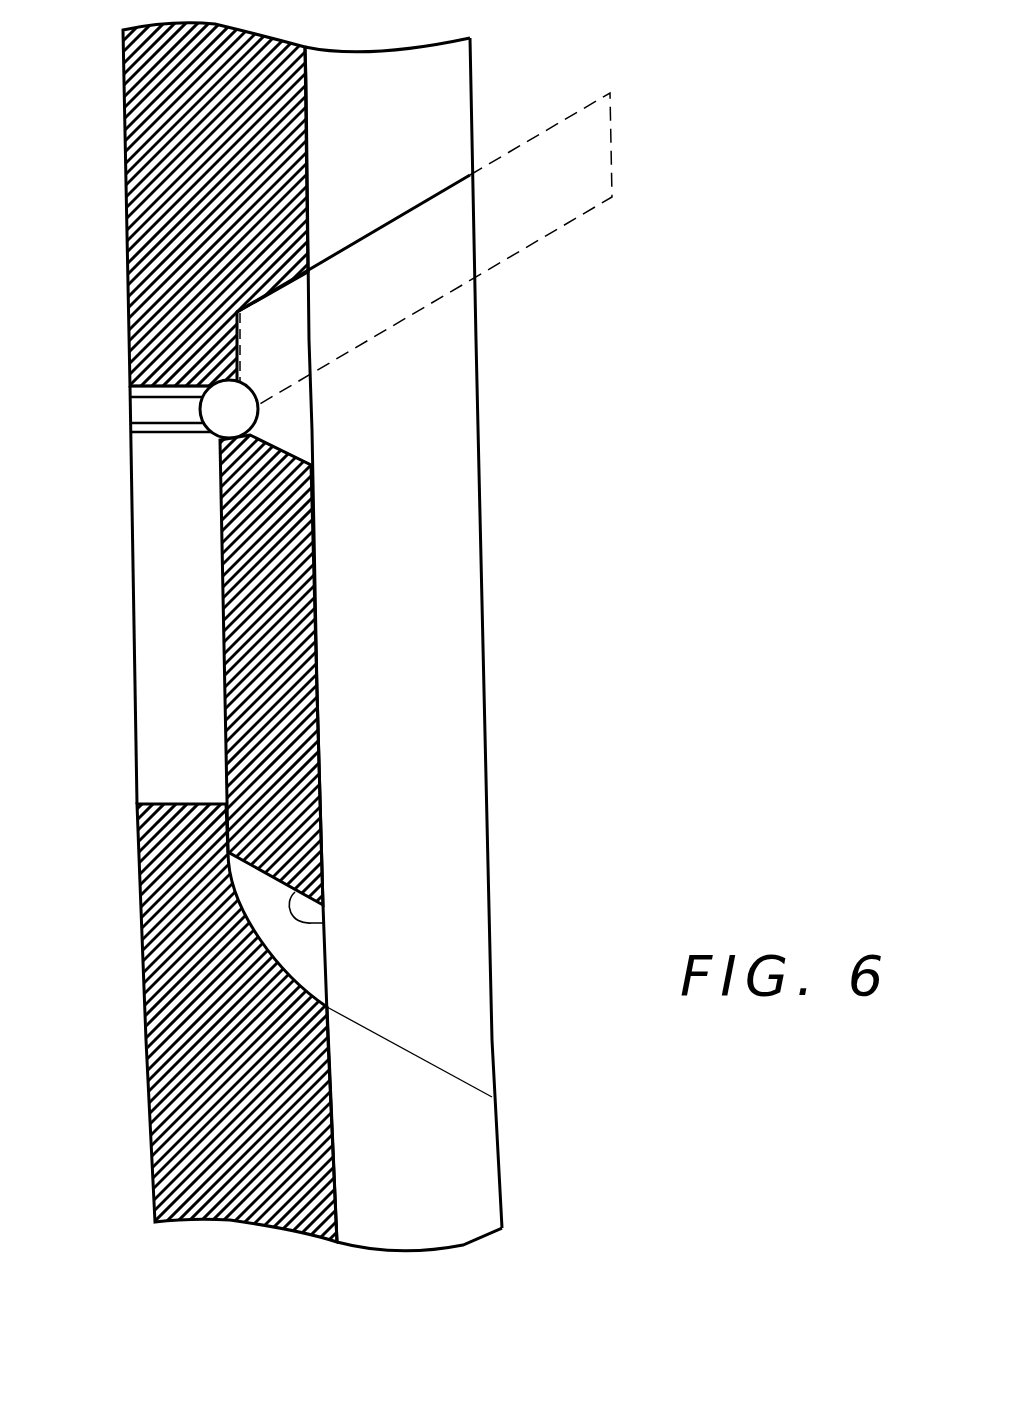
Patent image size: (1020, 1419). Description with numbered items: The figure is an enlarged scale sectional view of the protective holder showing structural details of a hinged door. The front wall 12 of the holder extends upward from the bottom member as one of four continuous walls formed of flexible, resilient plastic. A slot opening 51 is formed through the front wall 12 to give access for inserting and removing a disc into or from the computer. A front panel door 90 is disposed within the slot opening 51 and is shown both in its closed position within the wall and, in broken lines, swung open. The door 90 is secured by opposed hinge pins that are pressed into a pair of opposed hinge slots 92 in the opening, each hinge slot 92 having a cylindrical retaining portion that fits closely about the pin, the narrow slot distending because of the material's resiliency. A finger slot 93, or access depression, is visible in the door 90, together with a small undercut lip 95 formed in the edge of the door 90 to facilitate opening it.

The front wall 12 is at (127, 242).
The slot opening 51 is at (124, 613).
The front panel door 90 is at (317, 620).
The hinge slot 92 is at (130, 411).
The finger slot 93 is at (363, 1027).
The undercut lip 95 is at (325, 923).